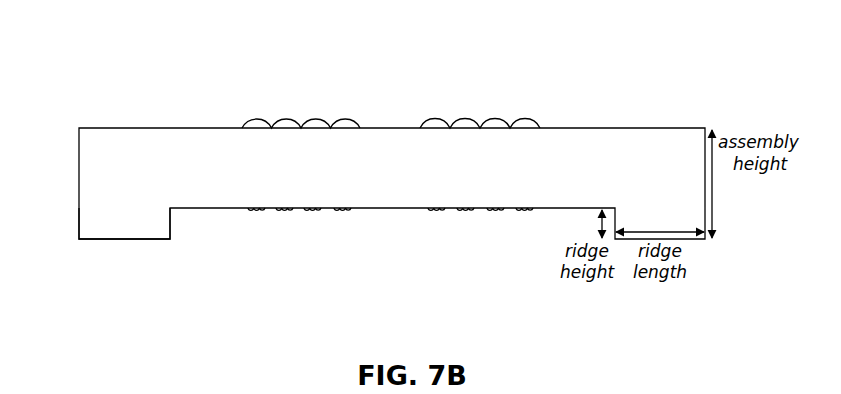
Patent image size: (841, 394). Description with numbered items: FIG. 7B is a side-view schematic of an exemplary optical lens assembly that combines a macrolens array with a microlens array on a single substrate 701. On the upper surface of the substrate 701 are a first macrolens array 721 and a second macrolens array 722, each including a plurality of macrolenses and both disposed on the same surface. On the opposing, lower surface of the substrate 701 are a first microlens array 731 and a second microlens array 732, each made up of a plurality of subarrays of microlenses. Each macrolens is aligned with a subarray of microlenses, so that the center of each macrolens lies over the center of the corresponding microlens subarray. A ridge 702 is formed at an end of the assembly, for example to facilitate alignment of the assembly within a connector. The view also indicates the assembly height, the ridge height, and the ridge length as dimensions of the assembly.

The substrate 701 is at (392, 183).
The ridge 702 is at (81, 242).
The first macrolens array 721 is at (235, 105).
The second macrolens array 722 is at (547, 105).
The first microlens array 731 is at (235, 233).
The second microlens array 732 is at (547, 233).